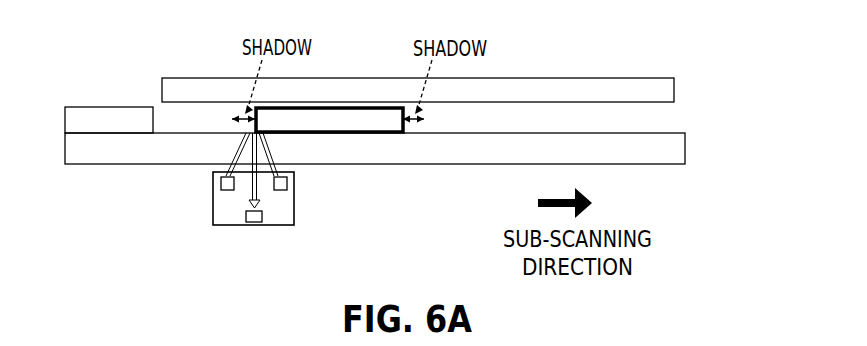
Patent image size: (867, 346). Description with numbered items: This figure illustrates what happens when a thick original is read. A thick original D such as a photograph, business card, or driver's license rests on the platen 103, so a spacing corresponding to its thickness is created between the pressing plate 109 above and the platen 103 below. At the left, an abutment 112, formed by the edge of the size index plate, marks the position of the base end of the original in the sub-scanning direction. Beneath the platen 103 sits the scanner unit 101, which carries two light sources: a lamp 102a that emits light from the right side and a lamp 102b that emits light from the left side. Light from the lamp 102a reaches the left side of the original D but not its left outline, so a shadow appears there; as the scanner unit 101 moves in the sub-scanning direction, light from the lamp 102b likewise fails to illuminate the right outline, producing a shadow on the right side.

The scanner unit 101 is at (256, 207).
The lamp 102a is at (294, 190).
The lamp 102b is at (213, 190).
The platen 103 is at (688, 134).
The pressing plate 109 is at (560, 78).
The abutment 112 is at (88, 107).
The original D is at (350, 107).